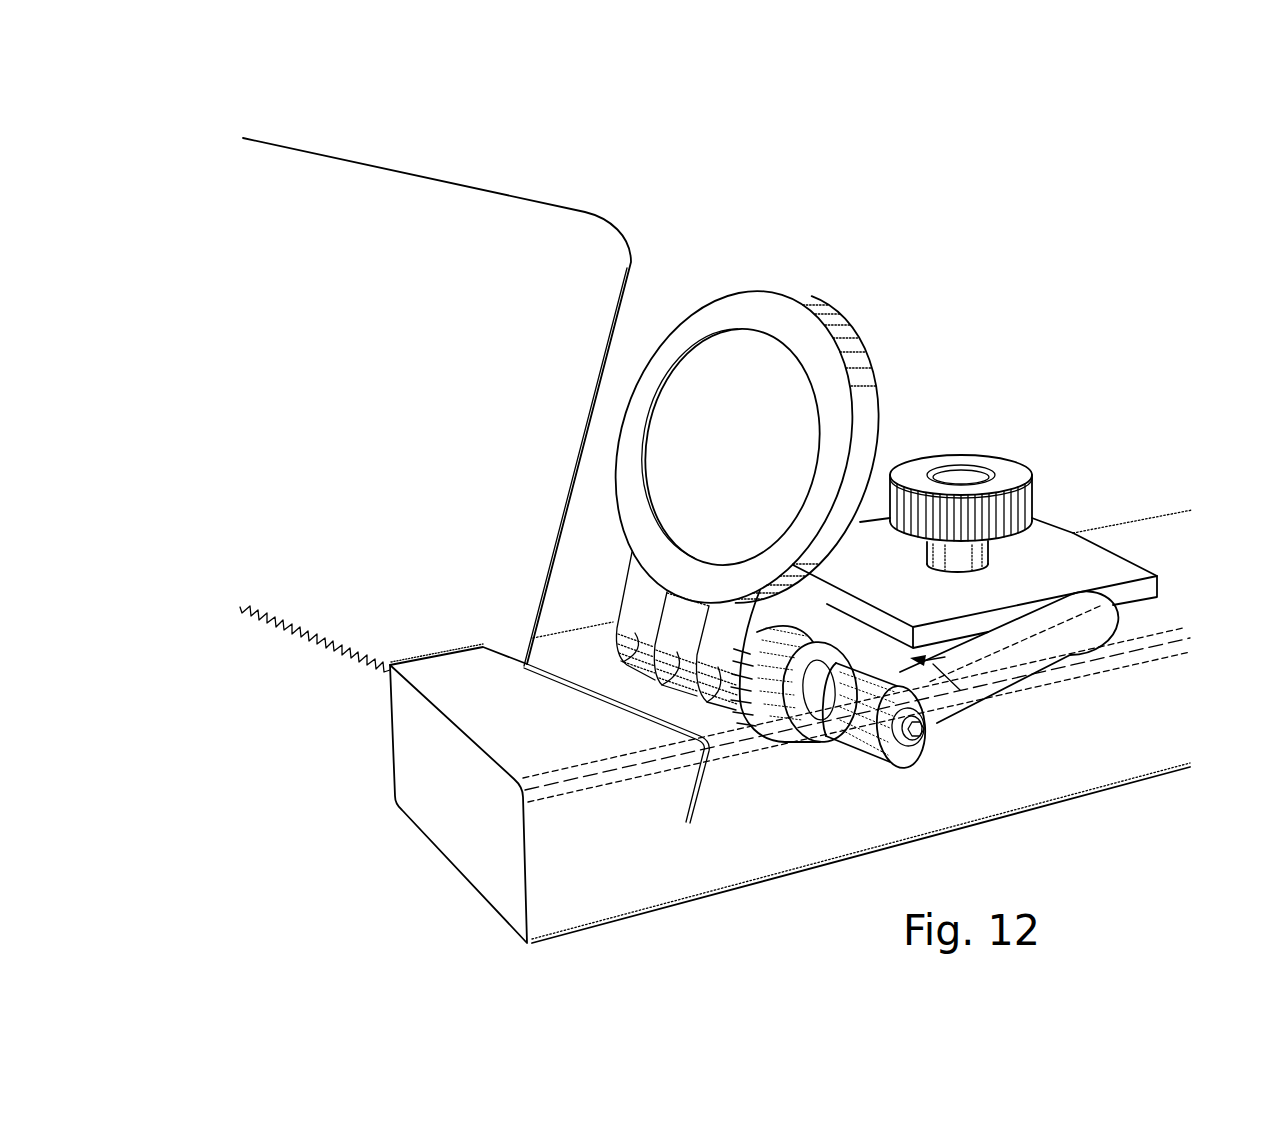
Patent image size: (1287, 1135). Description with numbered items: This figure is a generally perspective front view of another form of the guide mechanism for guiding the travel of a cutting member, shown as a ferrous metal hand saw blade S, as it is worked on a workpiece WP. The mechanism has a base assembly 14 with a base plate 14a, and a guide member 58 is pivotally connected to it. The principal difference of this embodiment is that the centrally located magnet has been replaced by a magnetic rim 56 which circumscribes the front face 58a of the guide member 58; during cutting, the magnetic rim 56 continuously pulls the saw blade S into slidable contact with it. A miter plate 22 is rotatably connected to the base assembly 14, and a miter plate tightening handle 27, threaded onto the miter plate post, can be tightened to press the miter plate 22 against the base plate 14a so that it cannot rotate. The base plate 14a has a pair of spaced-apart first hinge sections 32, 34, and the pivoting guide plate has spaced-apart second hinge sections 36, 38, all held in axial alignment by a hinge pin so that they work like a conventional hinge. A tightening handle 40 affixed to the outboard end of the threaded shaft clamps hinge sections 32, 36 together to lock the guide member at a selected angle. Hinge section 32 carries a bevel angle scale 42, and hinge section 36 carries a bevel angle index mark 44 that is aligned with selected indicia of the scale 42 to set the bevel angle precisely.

The saw blade S is at (476, 352).
The workpiece WP is at (450, 815).
The magnetic rim 56 is at (757, 441).
The guide member 58 is at (868, 441).
The front face 58a is at (732, 447).
The second hinge section 38 is at (623, 660).
The first hinge section 34 is at (660, 683).
The second hinge section 36 is at (713, 702).
The first hinge section 32 is at (793, 637).
The bevel angle index mark 44 is at (740, 650).
The bevel angle scale 42 is at (763, 723).
The miter plate tightening handle 27 is at (996, 466).
The miter plate 22 is at (1047, 538).
The tightening handle 40 is at (1047, 650).
The base assembly 14 is at (893, 662).
The base plate 14a is at (933, 664).